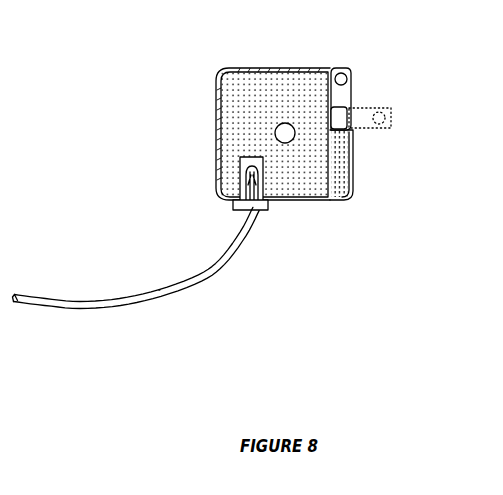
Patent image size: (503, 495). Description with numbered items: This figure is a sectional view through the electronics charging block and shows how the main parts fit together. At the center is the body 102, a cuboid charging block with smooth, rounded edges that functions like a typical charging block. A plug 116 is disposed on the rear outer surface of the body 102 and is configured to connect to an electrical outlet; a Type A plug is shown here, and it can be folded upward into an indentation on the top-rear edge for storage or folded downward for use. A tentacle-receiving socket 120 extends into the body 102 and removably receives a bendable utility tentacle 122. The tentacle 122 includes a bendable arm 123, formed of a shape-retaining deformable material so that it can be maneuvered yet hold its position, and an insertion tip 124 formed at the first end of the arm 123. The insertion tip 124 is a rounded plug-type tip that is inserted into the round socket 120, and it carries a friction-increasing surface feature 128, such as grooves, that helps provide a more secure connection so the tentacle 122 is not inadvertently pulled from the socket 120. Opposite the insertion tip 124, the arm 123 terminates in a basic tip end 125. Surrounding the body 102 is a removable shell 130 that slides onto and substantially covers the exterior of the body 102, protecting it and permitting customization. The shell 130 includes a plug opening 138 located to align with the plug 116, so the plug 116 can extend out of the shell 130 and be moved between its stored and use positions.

The body 102 is at (236, 86).
The plug 116 is at (342, 92).
The tentacle-receiving socket 120 is at (278, 133).
The bendable utility tentacle 122 is at (85, 292).
The bendable arm 123 is at (160, 292).
The insertion tip 124 is at (233, 201).
The tip end 125 is at (17, 296).
The friction-increasing surface feature 128 is at (260, 210).
The removable shell 130 is at (356, 178).
The plug opening 138 is at (332, 71).